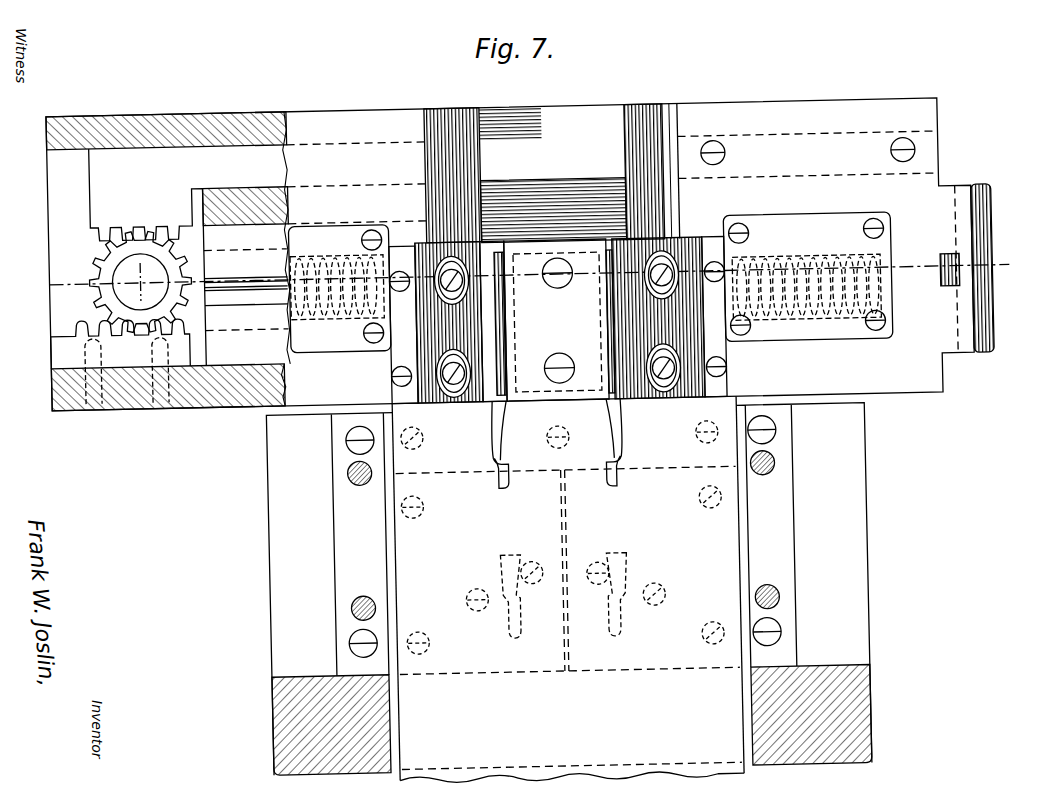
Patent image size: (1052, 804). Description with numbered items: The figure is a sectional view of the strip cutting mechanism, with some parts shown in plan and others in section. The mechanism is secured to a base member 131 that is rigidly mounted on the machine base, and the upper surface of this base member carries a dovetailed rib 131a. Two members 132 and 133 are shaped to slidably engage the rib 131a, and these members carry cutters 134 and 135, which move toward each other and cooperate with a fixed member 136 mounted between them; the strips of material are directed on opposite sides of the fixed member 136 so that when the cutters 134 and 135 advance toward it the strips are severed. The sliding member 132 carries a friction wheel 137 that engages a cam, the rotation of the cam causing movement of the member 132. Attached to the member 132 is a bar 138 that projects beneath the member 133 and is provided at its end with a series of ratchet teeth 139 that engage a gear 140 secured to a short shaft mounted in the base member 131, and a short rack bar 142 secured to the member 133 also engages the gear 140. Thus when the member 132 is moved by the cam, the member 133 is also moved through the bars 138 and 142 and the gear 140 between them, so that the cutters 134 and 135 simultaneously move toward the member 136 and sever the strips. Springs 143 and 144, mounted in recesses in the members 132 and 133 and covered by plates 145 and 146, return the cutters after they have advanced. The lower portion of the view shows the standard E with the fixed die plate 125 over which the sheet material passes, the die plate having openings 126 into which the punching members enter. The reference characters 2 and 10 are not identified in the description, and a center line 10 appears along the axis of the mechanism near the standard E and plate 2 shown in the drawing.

The plate 2 is at (739, 542).
The axis line 10 is at (530, 277).
The fixed die plate 125 is at (739, 571).
The openings 126 is at (509, 612).
The base member 131 is at (526, 120).
The dovetailed rib 131a is at (246, 298).
The sliding member 132 is at (786, 126).
The sliding member 133 is at (218, 118).
The cutter 134 is at (670, 415).
The cutter 135 is at (454, 419).
The fixed member 136 is at (571, 403).
The friction wheel 137 is at (993, 273).
The bar 138 is at (117, 167).
The ratchet teeth 139 is at (147, 230).
The gear 140 is at (96, 255).
The short rack bar 142 is at (66, 351).
The spring 143 is at (812, 322).
The spring 144 is at (337, 301).
The plate 145 is at (802, 238).
The plate 146 is at (339, 241).
The standard E is at (281, 723).